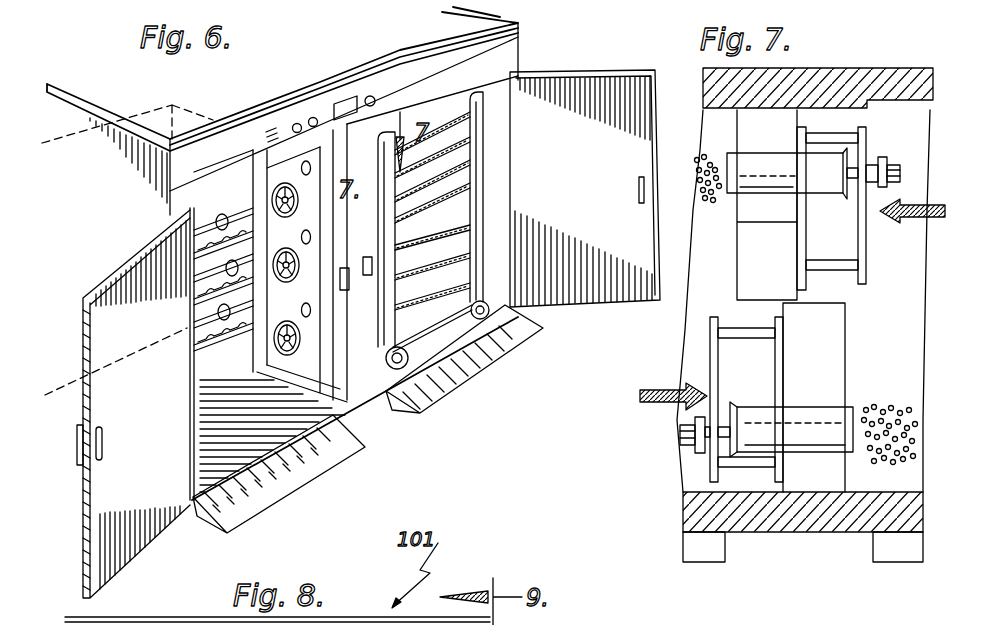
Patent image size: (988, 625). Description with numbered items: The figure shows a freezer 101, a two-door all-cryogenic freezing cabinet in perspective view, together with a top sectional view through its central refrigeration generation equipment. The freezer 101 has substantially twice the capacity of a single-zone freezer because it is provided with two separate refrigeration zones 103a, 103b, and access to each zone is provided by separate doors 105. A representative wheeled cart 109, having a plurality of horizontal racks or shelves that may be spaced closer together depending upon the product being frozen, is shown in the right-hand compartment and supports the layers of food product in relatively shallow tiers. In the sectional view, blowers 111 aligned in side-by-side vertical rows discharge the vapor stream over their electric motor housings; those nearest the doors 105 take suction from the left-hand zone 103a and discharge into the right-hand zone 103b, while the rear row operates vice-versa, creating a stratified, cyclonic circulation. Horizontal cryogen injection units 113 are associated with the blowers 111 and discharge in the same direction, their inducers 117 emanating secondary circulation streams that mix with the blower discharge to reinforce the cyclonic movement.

In FIG. 6, the freezer 101 is at (537, 52).
In FIG. 6, the refrigeration zone 103a is at (222, 450).
In FIG. 7, the refrigeration zone 103a is at (712, 298).
In FIG. 6, the refrigeration zone 103b is at (445, 345).
In FIG. 7, the refrigeration zone 103b is at (905, 316).
In FIG. 6, the door 105 is at (163, 412).
In FIG. 7, the door 105 is at (700, 545).
In FIG. 6, the wheeled cart 109 is at (440, 338).
In FIG. 7, the blower 111 is at (818, 133).
In FIG. 7, the cryogen injection unit 113 is at (880, 143).
In FIG. 7, the inducer 117 is at (767, 160).